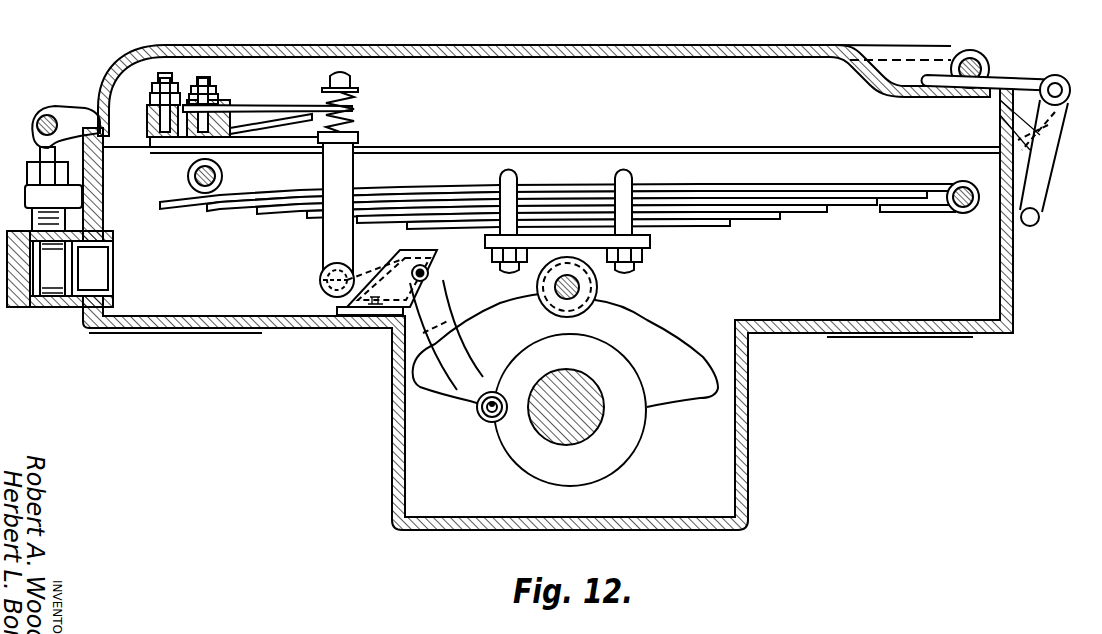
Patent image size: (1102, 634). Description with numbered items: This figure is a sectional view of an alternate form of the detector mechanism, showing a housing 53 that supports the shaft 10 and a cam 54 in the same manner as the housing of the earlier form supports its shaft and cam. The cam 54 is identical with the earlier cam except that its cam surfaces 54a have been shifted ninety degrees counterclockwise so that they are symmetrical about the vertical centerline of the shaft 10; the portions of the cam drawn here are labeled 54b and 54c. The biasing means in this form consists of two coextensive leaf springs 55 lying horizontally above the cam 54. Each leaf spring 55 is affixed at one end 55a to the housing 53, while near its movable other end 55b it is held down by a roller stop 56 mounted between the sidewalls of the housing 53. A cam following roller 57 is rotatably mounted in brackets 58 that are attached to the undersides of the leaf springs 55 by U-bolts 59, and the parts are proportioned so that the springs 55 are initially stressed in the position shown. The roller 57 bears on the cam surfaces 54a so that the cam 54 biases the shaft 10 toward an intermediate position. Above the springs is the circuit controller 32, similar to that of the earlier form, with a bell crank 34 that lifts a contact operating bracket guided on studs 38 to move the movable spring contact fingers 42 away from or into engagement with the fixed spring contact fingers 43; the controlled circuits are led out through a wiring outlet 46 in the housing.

The shaft 10 is at (548, 425).
The circuit controller 32 is at (256, 120).
The bell crank 34 is at (434, 306).
The studs 38 is at (336, 70).
The movable spring contact fingers 42 is at (270, 111).
The fixed spring contact fingers 43 is at (278, 122).
The wiring outlet 46 is at (57, 308).
The housing 53 is at (748, 425).
The cam 54 is at (630, 440).
The cam surfaces 54a is at (487, 316).
The cam upper portion 54b is at (590, 310).
The cam pin 54c is at (486, 421).
The leaf springs 55 is at (702, 190).
The fixed end of leaf spring 55a is at (947, 192).
The movable end of leaf spring 55b is at (170, 212).
The roller stop 56 is at (224, 178).
The cam following roller 57 is at (600, 290).
The brackets 58 is at (652, 245).
The U-bolts 59 is at (622, 178).